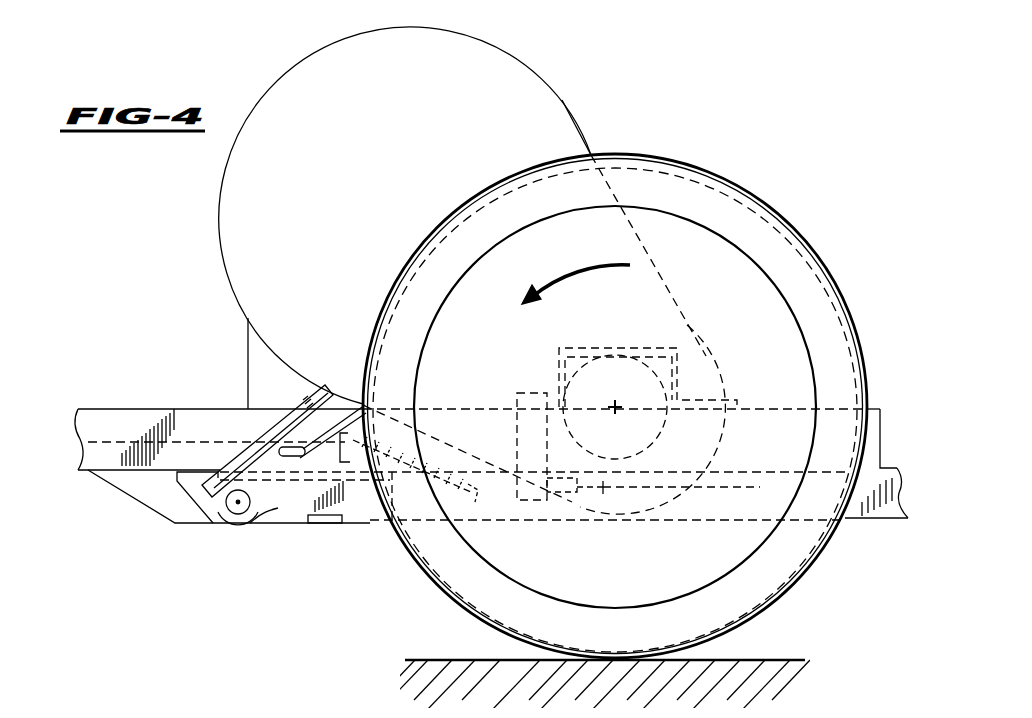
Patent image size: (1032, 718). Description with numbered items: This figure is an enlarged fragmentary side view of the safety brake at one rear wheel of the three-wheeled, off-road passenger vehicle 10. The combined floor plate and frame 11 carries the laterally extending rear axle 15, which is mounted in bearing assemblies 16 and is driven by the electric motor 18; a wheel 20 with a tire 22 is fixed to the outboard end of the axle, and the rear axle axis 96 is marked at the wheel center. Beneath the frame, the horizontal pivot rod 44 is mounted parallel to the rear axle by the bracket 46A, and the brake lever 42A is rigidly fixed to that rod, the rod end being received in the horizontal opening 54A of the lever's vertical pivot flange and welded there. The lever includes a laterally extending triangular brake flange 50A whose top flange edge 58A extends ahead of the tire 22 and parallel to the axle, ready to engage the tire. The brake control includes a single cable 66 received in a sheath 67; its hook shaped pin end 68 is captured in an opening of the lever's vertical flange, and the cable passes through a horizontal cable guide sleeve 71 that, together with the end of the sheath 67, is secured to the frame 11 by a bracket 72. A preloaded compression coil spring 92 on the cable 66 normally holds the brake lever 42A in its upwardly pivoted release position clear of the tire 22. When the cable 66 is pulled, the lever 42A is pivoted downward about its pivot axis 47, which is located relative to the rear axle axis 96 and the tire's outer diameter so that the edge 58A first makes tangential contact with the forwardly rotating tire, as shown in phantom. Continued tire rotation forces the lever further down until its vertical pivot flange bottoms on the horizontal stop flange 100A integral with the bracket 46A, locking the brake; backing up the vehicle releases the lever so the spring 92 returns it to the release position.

The passenger vehicle 10 is at (102, 398).
The combined floor plate and frame 11 is at (152, 408).
The rear axle 15 is at (683, 385).
The bearing assemblies 16 is at (660, 345).
The electric motor 18 is at (562, 100).
The wheel 20 is at (740, 262).
The tire 22 is at (690, 158).
The sheath 67 is at (715, 200).
The bracket 72 is at (512, 440).
The compression coil spring 92 is at (440, 457).
The rear axle axis 96 is at (620, 410).
The cable guide sleeve 71 is at (457, 550).
The brake flange 50A is at (253, 443).
The top flange edge 58A is at (375, 357).
The hook shaped pin end 68 is at (288, 458).
The pivot axis 47 is at (237, 514).
The pivot rod 44 is at (200, 515).
The bracket 46A is at (176, 499).
The horizontal opening 54A is at (270, 508).
The brake lever 42A is at (268, 528).
The stop flange 100A is at (328, 525).
The cable 66 is at (362, 505).